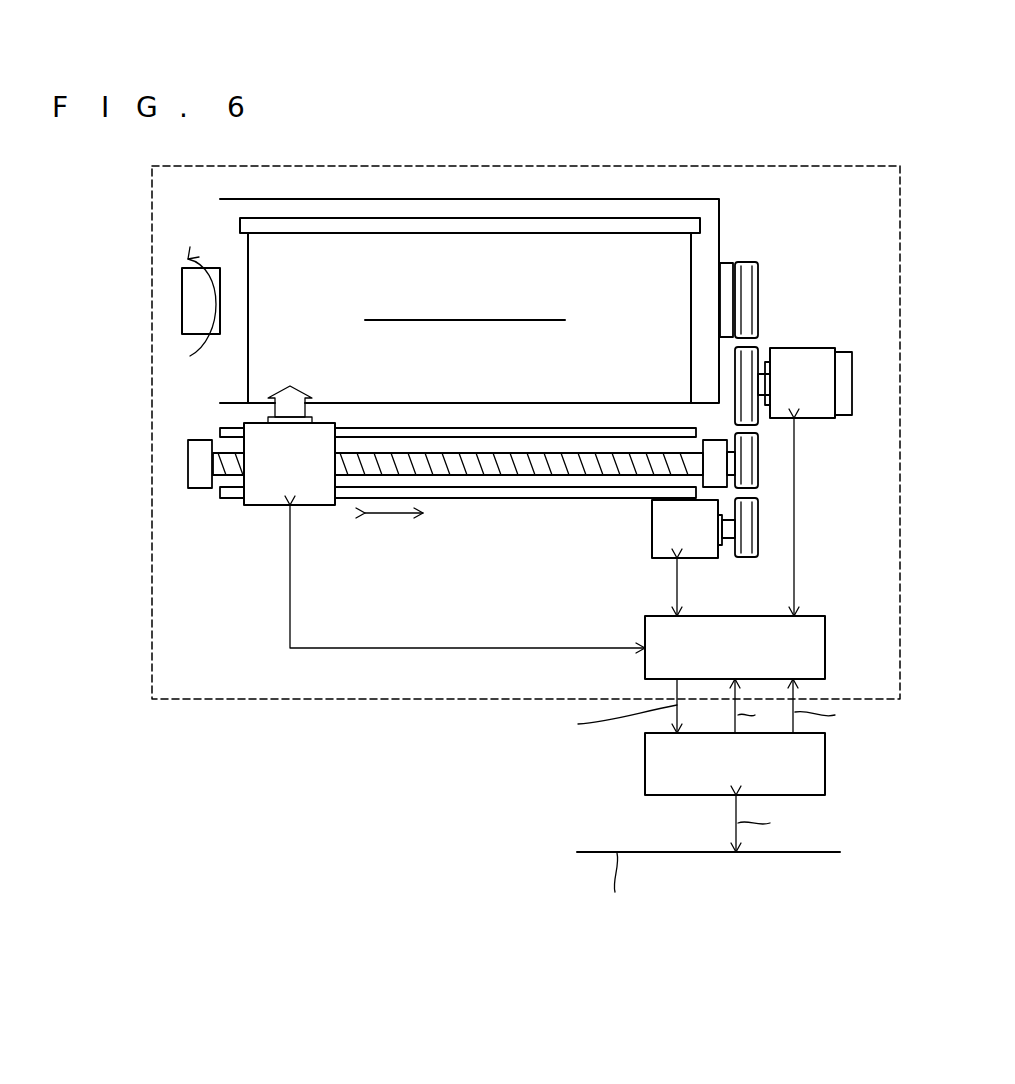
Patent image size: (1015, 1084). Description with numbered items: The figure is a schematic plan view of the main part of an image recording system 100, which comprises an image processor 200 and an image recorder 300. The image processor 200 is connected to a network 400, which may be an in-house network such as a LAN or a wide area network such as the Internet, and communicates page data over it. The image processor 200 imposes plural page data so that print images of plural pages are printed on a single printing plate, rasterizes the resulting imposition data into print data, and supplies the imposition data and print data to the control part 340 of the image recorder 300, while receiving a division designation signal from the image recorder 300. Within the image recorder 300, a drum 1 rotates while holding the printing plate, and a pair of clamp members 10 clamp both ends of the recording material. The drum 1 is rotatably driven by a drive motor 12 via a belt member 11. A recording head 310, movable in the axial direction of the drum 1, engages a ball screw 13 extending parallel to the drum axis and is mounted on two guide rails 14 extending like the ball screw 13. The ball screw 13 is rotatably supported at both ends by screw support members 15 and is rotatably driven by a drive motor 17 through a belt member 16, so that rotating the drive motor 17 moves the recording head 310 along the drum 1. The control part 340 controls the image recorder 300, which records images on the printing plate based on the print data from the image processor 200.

The drum 1 is at (233, 238).
The clamp members 10 is at (644, 218).
The belt member 11 is at (745, 276).
The drive motor 12 is at (806, 362).
The ball screw 13 is at (455, 463).
The guide rails 14 is at (535, 430).
The screw support members 15 is at (200, 478).
The belt member 16 is at (745, 527).
The drive motor 17 is at (707, 543).
The image recording system 100 is at (998, 160).
The image processor 200 is at (735, 764).
The image recorder 300 is at (151, 662).
The recording head 310 is at (262, 490).
The control part 340 is at (735, 647).
The network 400 is at (681, 889).